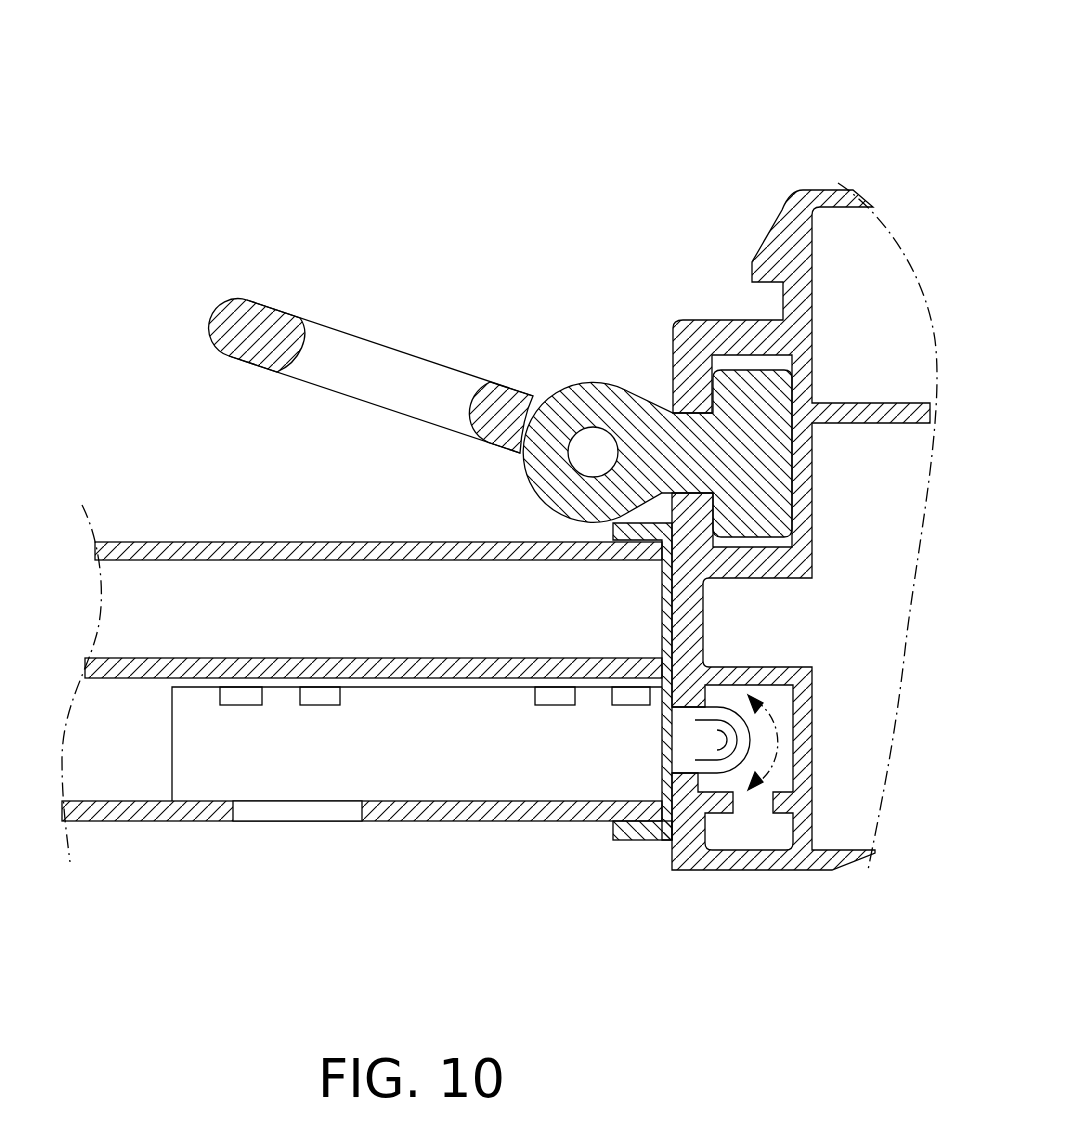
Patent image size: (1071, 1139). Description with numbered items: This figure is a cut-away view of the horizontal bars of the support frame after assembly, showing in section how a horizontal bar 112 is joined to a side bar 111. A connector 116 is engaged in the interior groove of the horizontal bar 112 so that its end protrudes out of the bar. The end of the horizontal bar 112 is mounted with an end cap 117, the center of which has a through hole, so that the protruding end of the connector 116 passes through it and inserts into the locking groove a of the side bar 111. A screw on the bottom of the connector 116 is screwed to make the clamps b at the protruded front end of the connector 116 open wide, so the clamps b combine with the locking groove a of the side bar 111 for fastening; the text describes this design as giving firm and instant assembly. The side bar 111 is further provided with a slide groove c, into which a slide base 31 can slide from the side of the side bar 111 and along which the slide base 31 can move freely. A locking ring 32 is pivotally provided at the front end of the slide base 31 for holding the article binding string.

The side bar 111 is at (788, 235).
The horizontal bar 112 is at (218, 552).
The connector 116 is at (480, 770).
The end cap 117 is at (636, 845).
The slide base 31 is at (607, 400).
The locking ring 32 is at (270, 318).
The locking groove a is at (783, 742).
The clamp b is at (732, 690).
The slide groove c is at (757, 365).